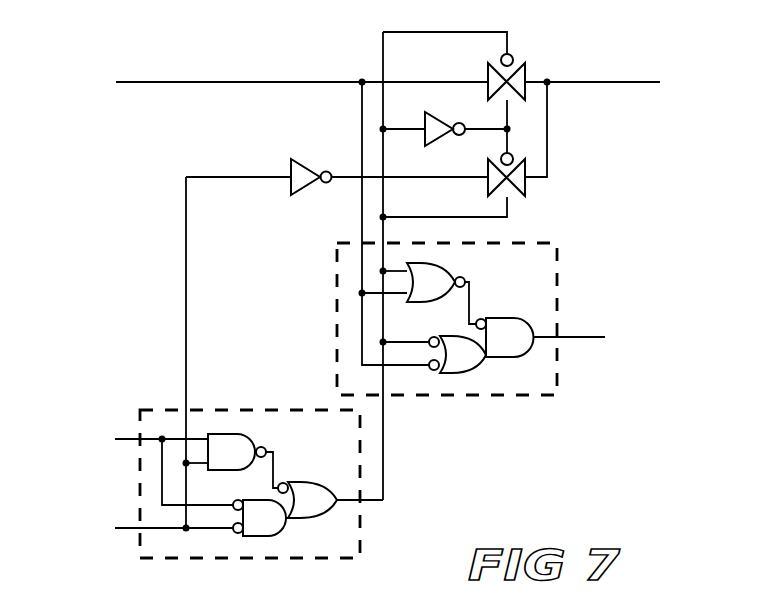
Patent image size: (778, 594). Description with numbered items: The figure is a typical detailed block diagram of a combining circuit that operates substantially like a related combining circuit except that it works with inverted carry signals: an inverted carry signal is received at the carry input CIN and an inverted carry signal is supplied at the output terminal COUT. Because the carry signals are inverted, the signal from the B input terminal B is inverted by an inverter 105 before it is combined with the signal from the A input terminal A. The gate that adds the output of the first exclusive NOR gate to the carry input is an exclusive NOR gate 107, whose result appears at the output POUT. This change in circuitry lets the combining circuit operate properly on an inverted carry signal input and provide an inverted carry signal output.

The inverter 105 is at (307, 158).
The exclusive NOR gate 107 is at (530, 397).
The inverted carry signal input CIN is at (100, 29).
The output terminal for inverted carry signal COUT is at (706, 65).
The output POUT is at (603, 338).
The A input terminal A is at (146, 433).
The B input terminal B is at (159, 523).